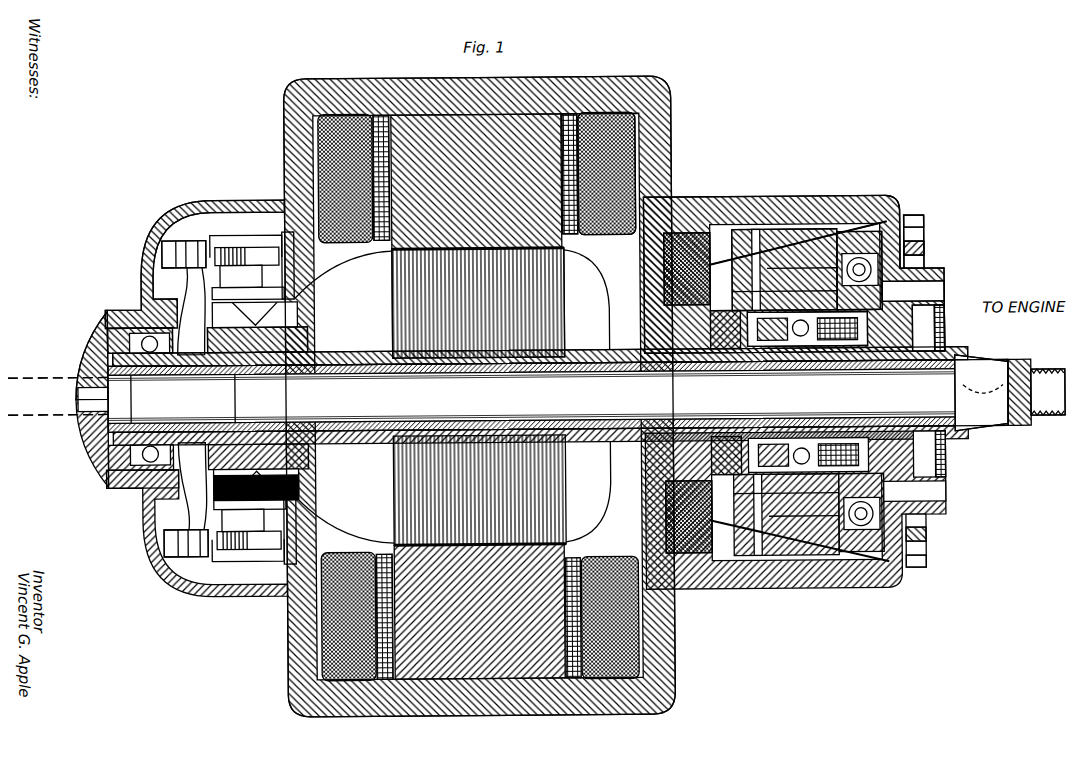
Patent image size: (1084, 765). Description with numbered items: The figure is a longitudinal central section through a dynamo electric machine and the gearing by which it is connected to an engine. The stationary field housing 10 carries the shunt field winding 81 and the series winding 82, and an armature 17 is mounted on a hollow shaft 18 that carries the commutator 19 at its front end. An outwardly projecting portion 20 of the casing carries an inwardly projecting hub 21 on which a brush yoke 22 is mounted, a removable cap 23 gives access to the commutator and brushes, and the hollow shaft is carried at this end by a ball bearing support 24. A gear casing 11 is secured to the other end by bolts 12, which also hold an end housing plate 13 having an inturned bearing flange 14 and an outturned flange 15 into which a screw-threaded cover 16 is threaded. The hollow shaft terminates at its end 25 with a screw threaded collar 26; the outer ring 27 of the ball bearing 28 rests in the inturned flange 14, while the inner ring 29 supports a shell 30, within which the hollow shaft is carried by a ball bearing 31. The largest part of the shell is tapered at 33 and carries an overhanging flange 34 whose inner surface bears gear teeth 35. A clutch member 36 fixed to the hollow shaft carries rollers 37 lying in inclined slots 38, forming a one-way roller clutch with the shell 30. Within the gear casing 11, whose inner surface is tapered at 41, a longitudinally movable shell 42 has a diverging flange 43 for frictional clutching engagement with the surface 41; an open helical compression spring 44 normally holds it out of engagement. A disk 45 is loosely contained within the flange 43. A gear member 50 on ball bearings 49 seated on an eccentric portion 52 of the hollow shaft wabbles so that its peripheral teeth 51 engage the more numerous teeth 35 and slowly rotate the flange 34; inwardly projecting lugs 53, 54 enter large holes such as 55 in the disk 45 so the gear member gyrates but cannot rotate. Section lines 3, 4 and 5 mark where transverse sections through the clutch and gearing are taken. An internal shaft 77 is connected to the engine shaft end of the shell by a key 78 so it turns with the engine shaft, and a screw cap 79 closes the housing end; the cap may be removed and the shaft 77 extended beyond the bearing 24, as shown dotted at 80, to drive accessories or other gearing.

The section line 3— 3 is at (870, 200).
The section line 4— 4 is at (748, 345).
The section line 5— 5 is at (805, 345).
The stationary frame or housing 10 is at (548, 72).
The gear casing 11 is at (672, 190).
The bolts 12 is at (917, 213).
The end housing plate 13 is at (893, 210).
The inturned bearing flange 14 is at (876, 192).
The outturned flange 15 is at (925, 260).
The cover or cap 16 is at (938, 282).
The armature 17 is at (599, 287).
The hollow shaft 18 is at (592, 345).
The commutator 19 is at (300, 332).
The outwardly projecting portion of the casing 20 is at (185, 587).
The inwardly projecting hub 21 is at (120, 492).
The brush yoke 22 is at (188, 229).
The cap or plate 23 is at (165, 212).
The ball bearing support 24 is at (110, 322).
The end of hollow shaft 25 is at (935, 432).
The screw threaded collar 26 is at (937, 447).
The outer ring 27 is at (917, 216).
The ball bearing 28 is at (917, 234).
The inner ball bearing ring 29 is at (920, 270).
The shell 30 is at (938, 297).
The ball bearing 31 is at (936, 328).
The tapered part of shell 33 is at (773, 230).
The overhanging flange 34 is at (765, 232).
The gear teeth 35 is at (917, 528).
The clutch member 36 is at (936, 342).
The clutch engaging rollers 37 is at (937, 312).
The inclined slots 38 is at (1010, 357).
The tapered inner surface 41 is at (822, 233).
The longitudinally movable shell 42 is at (718, 546).
The diverging flange 43 is at (893, 196).
The open helical compression spring 44 is at (540, 373).
The disk or plate 45 is at (713, 225).
The ball bearings 49 is at (937, 481).
The gear member 50 is at (937, 500).
The gear teeth 51 is at (893, 589).
The eccentric portion 52 is at (807, 351).
The inwardly projecting lug 53 is at (655, 246).
The inwardly projecting lug 54 is at (660, 490).
The hole or orifice 55 is at (660, 265).
The internal shaft 77 is at (558, 395).
The key 78 is at (975, 354).
The screw cap 79 is at (95, 347).
The extension of internal shaft 80 is at (50, 414).
The shunt field winding 81 is at (612, 104).
The series winding 82 is at (593, 100).